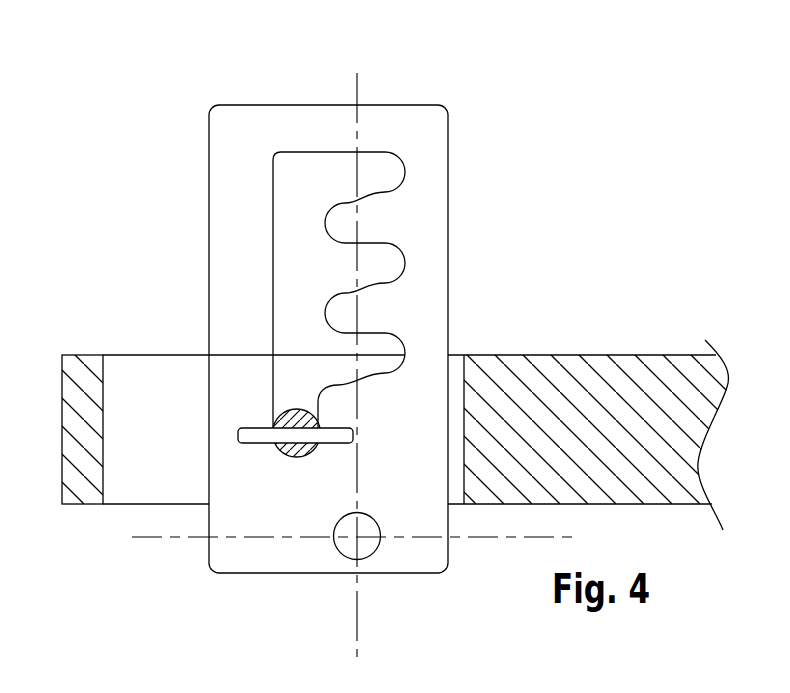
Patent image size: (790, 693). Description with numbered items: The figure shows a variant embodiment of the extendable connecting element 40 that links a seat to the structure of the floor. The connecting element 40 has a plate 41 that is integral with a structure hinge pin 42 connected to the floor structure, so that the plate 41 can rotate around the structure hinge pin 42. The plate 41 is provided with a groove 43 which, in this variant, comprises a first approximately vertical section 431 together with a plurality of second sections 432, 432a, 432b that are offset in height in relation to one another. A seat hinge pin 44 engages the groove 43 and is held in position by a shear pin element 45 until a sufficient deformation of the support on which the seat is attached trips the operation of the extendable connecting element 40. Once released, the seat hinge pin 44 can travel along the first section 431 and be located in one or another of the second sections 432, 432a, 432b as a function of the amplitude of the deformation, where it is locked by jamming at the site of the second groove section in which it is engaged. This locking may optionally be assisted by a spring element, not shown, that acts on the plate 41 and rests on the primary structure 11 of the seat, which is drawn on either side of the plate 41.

The primary structure 11 is at (600, 380).
The extendable connecting element 40 is at (303, 356).
The plate 41 is at (418, 138).
The structure hinge pin 42 is at (367, 543).
The groove 43 is at (342, 243).
The first approximately vertical section 431 is at (280, 272).
The second section 432 is at (399, 177).
The second section 432a is at (400, 270).
The second section 432b is at (389, 344).
The seat hinge pin 44 is at (292, 455).
The shear pin element 45 is at (250, 443).